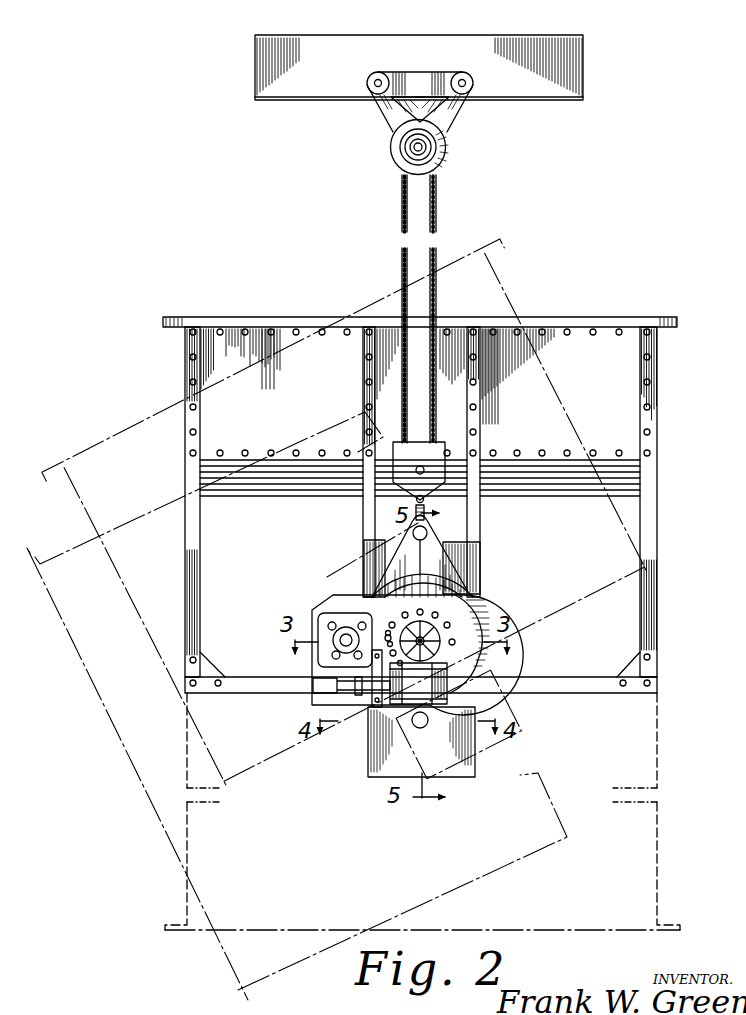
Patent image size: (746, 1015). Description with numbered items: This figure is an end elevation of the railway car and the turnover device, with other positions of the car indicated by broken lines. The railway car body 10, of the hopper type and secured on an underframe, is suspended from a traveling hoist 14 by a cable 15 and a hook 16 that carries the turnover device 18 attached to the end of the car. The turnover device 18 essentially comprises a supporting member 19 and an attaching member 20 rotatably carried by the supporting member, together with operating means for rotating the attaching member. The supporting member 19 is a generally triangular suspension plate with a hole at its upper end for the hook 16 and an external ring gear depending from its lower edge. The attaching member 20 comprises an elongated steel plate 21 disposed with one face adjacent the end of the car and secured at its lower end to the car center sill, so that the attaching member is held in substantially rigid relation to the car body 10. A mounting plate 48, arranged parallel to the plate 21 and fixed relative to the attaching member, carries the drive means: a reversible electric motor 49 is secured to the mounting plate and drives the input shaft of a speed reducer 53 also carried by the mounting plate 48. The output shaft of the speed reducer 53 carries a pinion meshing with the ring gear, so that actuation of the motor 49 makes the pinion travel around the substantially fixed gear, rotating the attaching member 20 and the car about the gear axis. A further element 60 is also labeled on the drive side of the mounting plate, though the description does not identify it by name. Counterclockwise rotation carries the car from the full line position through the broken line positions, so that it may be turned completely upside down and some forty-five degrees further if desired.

The railway car body 10 is at (658, 481).
The traveling hoist 14 is at (444, 157).
The cable 15 is at (404, 214).
The hook 16 is at (427, 511).
The turnover device 18 is at (488, 672).
The supporting member 19 is at (386, 574).
The attaching member 20 is at (480, 561).
The elongated steel plate 21 is at (372, 761).
The mounting plate 48 is at (476, 614).
The reversible electric motor 49 is at (430, 694).
The speed reducer 53 is at (322, 658).
The brake lever 60 is at (377, 649).